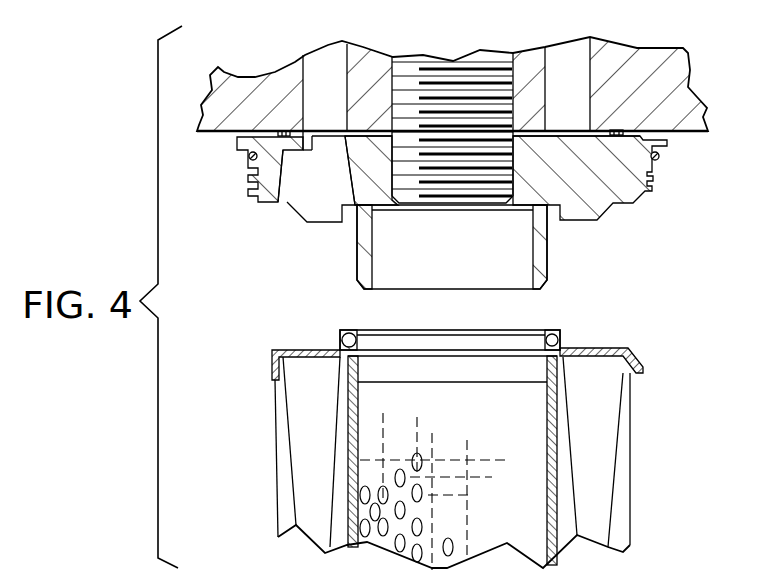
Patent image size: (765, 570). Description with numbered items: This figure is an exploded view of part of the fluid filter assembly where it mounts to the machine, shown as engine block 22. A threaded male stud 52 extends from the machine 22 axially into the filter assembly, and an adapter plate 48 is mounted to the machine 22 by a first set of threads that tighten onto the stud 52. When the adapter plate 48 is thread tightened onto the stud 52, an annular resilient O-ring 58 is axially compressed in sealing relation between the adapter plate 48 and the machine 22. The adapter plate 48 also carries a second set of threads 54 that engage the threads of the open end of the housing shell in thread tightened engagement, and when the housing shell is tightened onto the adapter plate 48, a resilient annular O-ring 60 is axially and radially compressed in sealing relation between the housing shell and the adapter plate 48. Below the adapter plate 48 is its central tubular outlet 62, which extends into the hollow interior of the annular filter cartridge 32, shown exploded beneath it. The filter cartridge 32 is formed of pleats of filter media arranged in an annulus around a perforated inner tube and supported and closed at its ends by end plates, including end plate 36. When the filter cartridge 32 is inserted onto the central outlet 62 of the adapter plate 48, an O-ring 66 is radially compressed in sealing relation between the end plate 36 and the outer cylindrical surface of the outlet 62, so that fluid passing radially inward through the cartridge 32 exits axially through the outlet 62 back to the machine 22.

The engine block 22 is at (689, 83).
The threaded male stud 52 is at (489, 57).
The second set of threads 54 is at (656, 173).
The adapter plate 48 is at (630, 192).
The O-ring 58 is at (619, 131).
The O-ring 60 is at (659, 156).
The central tubular outlet 62 is at (537, 267).
The O-ring 66 is at (558, 340).
The end plate 36 is at (603, 353).
The filter cartridge 32 is at (612, 472).